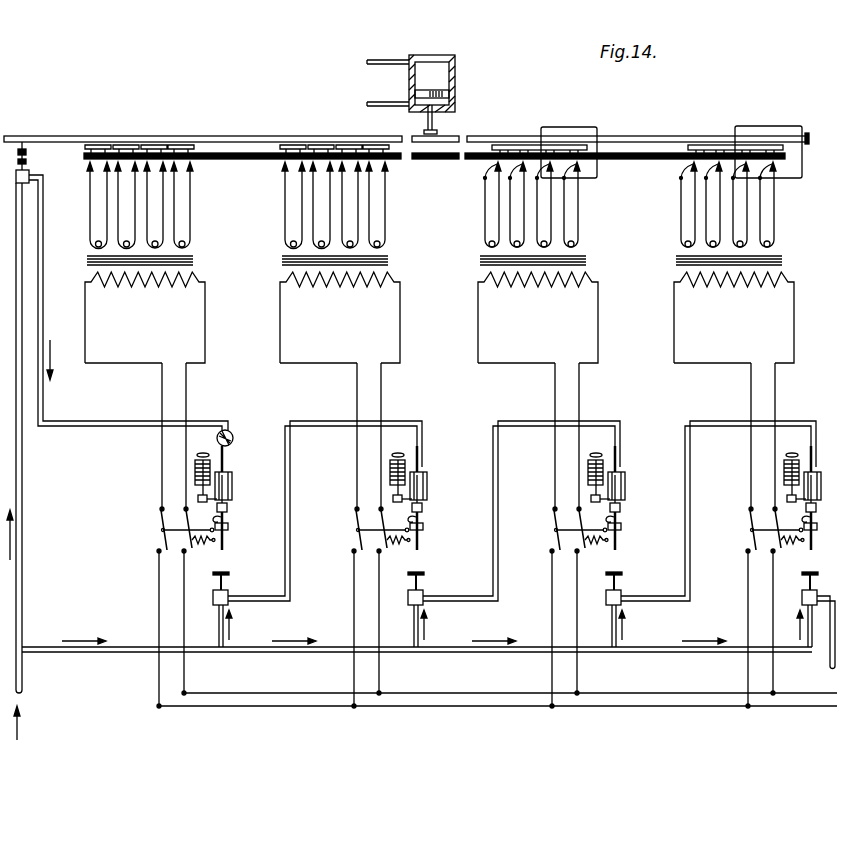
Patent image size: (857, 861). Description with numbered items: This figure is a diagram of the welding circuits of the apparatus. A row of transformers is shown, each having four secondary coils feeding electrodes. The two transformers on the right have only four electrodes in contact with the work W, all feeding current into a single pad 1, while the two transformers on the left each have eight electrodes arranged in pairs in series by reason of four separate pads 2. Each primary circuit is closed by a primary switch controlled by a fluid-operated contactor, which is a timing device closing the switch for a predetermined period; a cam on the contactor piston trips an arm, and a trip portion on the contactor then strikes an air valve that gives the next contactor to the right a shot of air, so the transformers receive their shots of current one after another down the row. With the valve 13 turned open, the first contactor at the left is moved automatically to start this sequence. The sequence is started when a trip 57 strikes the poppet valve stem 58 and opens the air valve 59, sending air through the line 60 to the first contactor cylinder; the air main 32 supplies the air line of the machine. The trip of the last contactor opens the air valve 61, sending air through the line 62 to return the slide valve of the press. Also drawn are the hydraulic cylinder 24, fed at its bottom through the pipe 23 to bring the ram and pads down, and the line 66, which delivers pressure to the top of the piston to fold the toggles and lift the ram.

The single pad 1 is at (735, 150).
The separate pads 2 is at (301, 137).
The valve 13 is at (232, 432).
The pipe 23 is at (409, 104).
The cylinder 24 is at (456, 80).
The air main 32 is at (22, 677).
The trip 57 is at (26, 150).
The poppet valve stem 58 is at (29, 161).
The air valve 59 is at (16, 177).
The line 60 is at (44, 246).
The air valve 61 is at (803, 598).
The line 62 is at (830, 657).
The line 66 is at (410, 60).
The work W is at (647, 150).